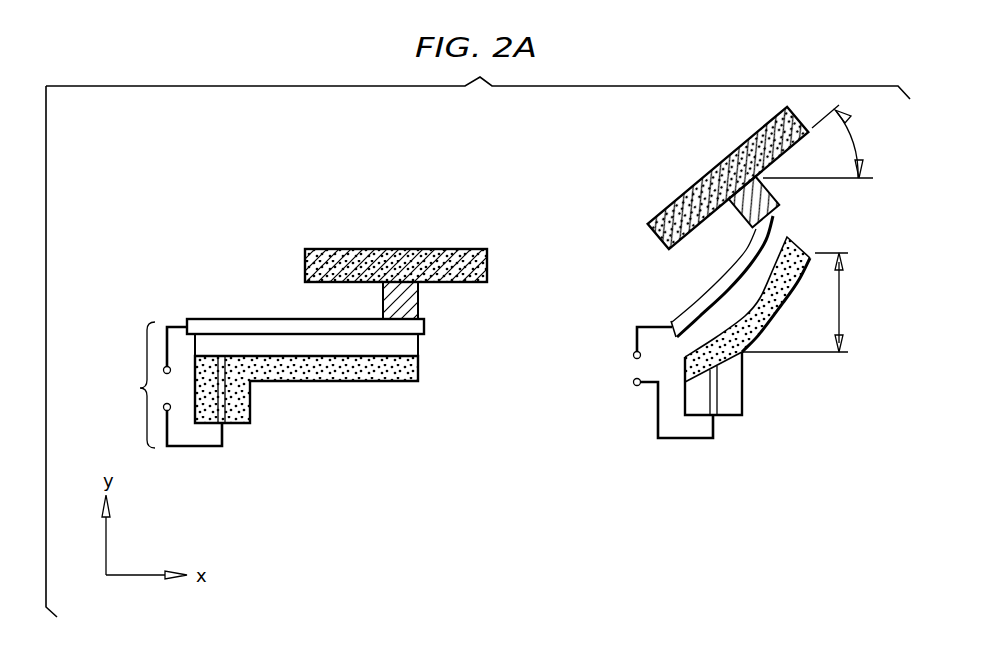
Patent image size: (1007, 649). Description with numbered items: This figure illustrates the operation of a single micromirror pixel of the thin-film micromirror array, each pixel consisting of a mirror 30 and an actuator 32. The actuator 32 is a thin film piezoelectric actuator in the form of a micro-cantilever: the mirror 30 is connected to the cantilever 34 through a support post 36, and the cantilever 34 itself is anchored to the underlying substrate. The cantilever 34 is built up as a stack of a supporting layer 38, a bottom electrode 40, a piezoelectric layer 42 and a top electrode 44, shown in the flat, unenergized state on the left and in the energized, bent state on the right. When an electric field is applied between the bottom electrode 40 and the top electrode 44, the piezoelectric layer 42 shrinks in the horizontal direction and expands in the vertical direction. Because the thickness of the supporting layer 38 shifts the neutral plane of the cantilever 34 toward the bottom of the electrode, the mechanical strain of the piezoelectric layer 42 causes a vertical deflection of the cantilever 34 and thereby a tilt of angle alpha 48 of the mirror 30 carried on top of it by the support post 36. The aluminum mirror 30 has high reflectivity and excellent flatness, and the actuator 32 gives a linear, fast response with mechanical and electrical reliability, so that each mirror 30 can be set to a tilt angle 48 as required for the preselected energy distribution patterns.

The mirror 30 is at (697, 183).
The actuator 32 is at (140, 388).
The cantilever 34 is at (300, 382).
The support post 36 is at (236, 423).
The supporting layer 38 is at (377, 382).
The bottom electrode 40 is at (419, 370).
The piezoelectric layer 42 is at (418, 348).
The top electrode 44 is at (252, 318).
The tilt angle alpha 48 is at (810, 228).